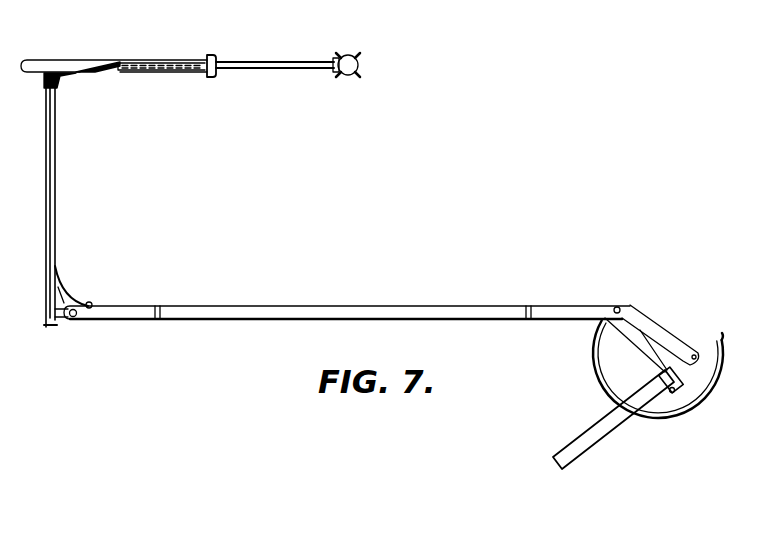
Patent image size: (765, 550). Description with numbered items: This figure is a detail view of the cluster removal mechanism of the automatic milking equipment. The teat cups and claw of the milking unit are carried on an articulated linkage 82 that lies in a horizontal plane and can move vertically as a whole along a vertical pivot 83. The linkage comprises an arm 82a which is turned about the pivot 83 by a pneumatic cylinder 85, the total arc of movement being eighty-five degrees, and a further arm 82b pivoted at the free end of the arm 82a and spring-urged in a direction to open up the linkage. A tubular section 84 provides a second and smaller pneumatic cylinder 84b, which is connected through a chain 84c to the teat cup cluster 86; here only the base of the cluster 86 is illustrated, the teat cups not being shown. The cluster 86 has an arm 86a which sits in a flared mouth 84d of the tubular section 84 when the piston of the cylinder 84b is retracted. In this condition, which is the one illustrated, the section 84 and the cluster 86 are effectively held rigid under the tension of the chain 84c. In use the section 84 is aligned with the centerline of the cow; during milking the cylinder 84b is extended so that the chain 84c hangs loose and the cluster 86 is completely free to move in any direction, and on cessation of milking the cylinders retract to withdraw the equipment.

The articulated linkage 82 is at (312, 303).
The arm 82a is at (211, 306).
The further arm 82b is at (56, 152).
The vertical pivot 83 is at (616, 306).
The tubular section 84 is at (141, 60).
The pneumatic cylinder 84b is at (60, 67).
The chain 84c is at (146, 75).
The flared mouth 84d is at (214, 58).
The pneumatic cylinder 85 is at (613, 420).
The teat cup cluster 86 is at (346, 54).
The arm 86a is at (250, 70).